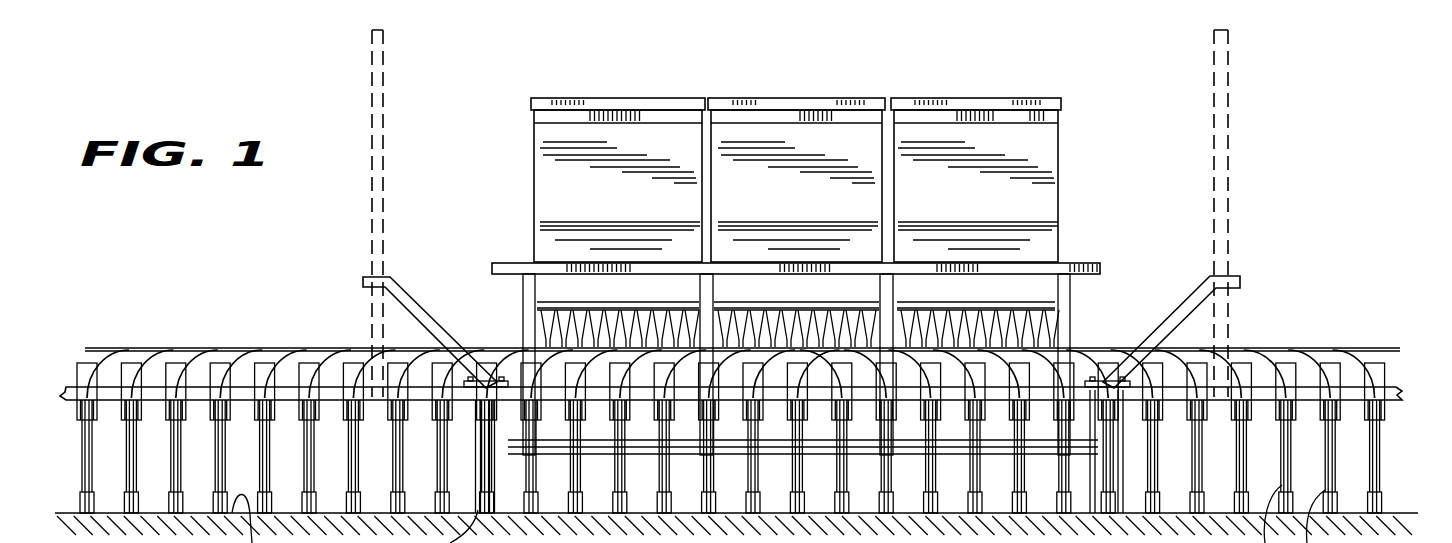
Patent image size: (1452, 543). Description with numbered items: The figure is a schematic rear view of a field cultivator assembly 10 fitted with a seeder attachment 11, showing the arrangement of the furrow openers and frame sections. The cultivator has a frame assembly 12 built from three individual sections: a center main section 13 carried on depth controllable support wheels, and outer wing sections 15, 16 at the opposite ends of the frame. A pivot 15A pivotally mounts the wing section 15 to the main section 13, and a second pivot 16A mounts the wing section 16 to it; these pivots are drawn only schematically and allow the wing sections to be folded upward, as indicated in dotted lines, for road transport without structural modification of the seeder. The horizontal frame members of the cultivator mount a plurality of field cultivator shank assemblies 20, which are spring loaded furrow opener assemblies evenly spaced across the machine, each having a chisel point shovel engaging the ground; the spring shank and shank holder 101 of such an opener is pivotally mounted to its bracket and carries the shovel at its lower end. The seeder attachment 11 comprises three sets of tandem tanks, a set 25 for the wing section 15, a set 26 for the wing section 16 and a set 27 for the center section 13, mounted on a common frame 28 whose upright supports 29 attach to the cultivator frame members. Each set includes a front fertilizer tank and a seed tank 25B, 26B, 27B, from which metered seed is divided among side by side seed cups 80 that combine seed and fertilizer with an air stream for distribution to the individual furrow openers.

The field cultivator assembly 10 is at (269, 330).
The seeder attachment 11 is at (522, 186).
The frame assembly 12 is at (145, 392).
The center main section 13 is at (597, 403).
The wing section 15 is at (375, 229).
The pivot 15A is at (370, 393).
The wing section 16 is at (1232, 218).
The second pivot 16A is at (1220, 393).
The field cultivator shank assemblies 20 is at (177, 367).
The tandem tank set 25 is at (555, 128).
The seed tank 25B is at (638, 138).
The tandem tank set 26 is at (985, 142).
The seed tank 26B is at (1040, 153).
The tandem tank set 27 is at (752, 113).
The seed tank 27B is at (838, 142).
The common frame 28 is at (492, 268).
The upright supports 29 is at (527, 308).
The seed cups 80 is at (667, 317).
The spring shank and shank holder 101 is at (1378, 455).